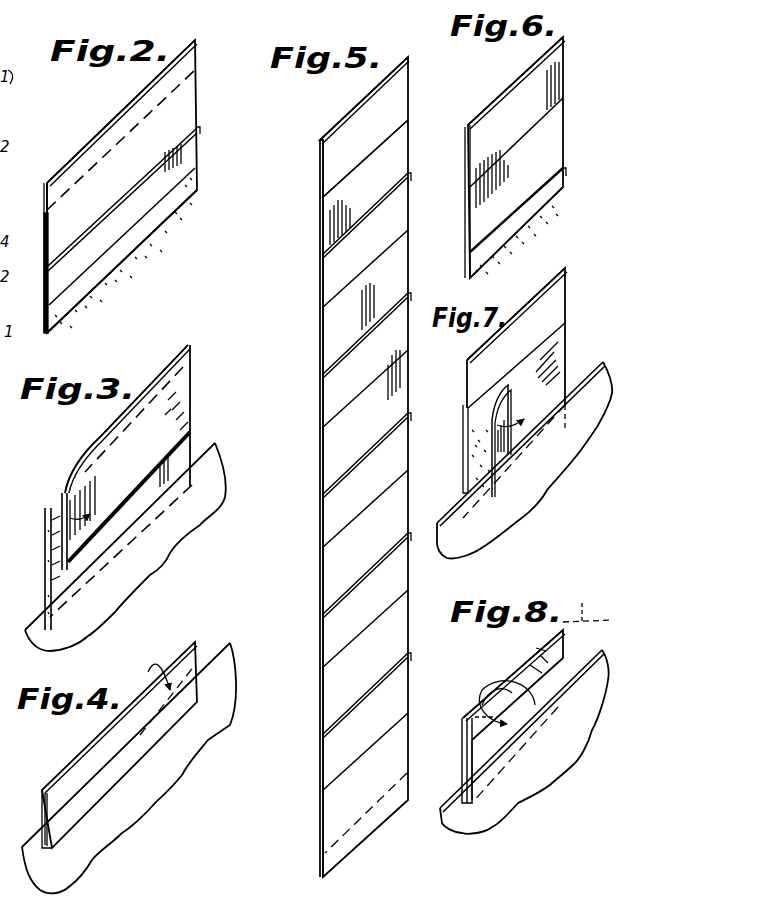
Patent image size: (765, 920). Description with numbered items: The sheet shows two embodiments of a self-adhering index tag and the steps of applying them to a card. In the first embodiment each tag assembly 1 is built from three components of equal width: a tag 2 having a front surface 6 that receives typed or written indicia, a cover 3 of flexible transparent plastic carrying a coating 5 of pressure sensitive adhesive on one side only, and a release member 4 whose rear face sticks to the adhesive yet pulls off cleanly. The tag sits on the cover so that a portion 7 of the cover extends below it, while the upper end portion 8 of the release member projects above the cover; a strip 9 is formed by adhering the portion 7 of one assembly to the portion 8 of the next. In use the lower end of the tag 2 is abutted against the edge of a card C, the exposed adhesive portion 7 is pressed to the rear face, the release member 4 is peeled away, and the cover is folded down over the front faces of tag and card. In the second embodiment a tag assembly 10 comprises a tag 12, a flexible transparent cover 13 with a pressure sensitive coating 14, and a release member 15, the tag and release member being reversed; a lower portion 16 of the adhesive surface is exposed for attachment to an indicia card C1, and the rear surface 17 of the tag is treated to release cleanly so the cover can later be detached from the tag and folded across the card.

In FIG. 2, the tag assembly 1 is at (110, 113).
In FIG. 3, the tag assembly 1 is at (206, 405).
In FIG. 2, the tag component 2 is at (193, 152).
In FIG. 3, the tag component 2 is at (194, 441).
In FIG. 4, the tag component 2 is at (42, 812).
In FIG. 3, the cover component 3 is at (45, 522).
In FIG. 4, the cover component 3 is at (197, 646).
In FIG. 2, the release member 4 is at (186, 107).
In FIG. 3, the release member 4 is at (191, 357).
In FIG. 2, the coating of pressure sensitive adhesive 5 is at (160, 217).
In FIG. 3, the coating of pressure sensitive adhesive 5 is at (47, 561).
In FIG. 2, the front surface 6 is at (160, 194).
In FIG. 3, the front surface 6 is at (124, 513).
In FIG. 2, the portion of the cover 7 is at (197, 188).
In FIG. 2, the upper end portion of the release member 8 is at (196, 52).
In FIG. 3, the strip 9 is at (2, 466).
In FIG. 5, the tag assembly 10 is at (412, 146).
In FIG. 6, the tag assembly 10 is at (497, 88).
In FIG. 7, the tag assembly 10 is at (598, 303).
In FIG. 8, the tag assembly 10 is at (502, 665).
In FIG. 5, the tag 12 is at (324, 155).
In FIG. 6, the tag 12 is at (560, 63).
In FIG. 7, the tag 12 is at (516, 353).
In FIG. 5, the flexible transparent cover 13 is at (320, 250).
In FIG. 6, the flexible transparent cover 13 is at (469, 230).
In FIG. 6, the pressure sensitive coating 14 is at (542, 197).
In FIG. 7, the pressure sensitive coating 14 is at (475, 457).
In FIG. 5, the release member 15 is at (322, 802).
In FIG. 6, the release member 15 is at (513, 117).
In FIG. 5, the portion of the lower end of the cover adhesive surface 16 is at (320, 282).
In FIG. 6, the portion of the lower end of the cover adhesive surface 16 is at (530, 218).
In FIG. 7, the portion of the lower end of the cover adhesive surface 16 is at (490, 520).
In FIG. 8, the portion of the lower end of the cover adhesive surface 16 is at (464, 740).
In FIG. 5, the rear surface of the tag 17 is at (318, 145).
In FIG. 6, the rear surface of the tag 17 is at (469, 145).
In FIG. 7, the rear surface of the tag 17 is at (467, 393).
In FIG. 8, the rear surface of the tag 17 is at (553, 673).
In FIG. 3, the card C is at (207, 511).
In FIG. 4, the card C is at (208, 738).
In FIG. 8, the card C is at (530, 748).
In FIG. 7, the indicia card C1 is at (573, 460).
In FIG. 8, the indicia card C1 is at (522, 790).